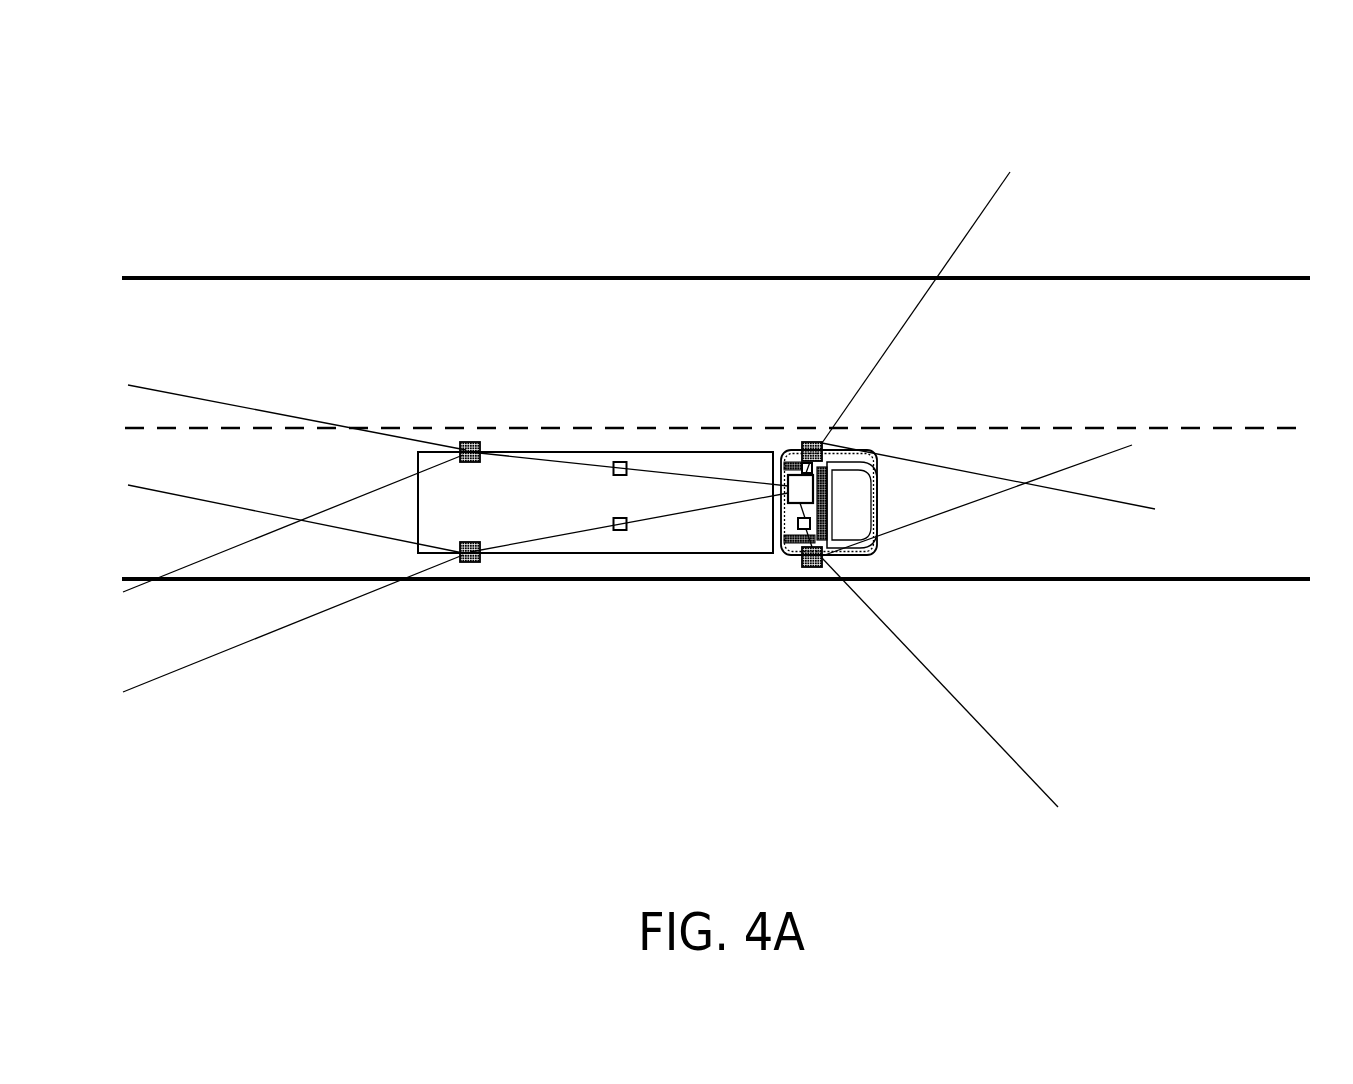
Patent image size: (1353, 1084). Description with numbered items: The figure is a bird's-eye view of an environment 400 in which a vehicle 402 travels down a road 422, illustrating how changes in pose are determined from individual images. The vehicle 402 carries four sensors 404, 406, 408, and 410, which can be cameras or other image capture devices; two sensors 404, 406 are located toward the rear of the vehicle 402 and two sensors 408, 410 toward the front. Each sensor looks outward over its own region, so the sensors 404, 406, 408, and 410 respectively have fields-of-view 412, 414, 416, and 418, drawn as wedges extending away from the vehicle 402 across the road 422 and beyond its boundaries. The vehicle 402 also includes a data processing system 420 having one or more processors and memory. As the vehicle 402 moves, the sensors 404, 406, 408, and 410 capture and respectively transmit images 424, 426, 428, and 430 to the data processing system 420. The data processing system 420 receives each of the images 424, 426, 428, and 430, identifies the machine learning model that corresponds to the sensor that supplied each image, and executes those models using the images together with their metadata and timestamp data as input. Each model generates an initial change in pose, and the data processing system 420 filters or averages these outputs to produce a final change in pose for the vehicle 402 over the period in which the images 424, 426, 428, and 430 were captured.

The environment 400 is at (290, 88).
The vehicle 402 is at (512, 452).
The sensor 404 is at (472, 442).
The sensor 406 is at (473, 562).
The sensor 408 is at (812, 442).
The sensor 410 is at (810, 568).
The field-of-view 412 is at (242, 404).
The field-of-view 414 is at (284, 626).
The field-of-view 416 is at (884, 356).
The field-of-view 418 is at (905, 648).
The data processing system 420 is at (800, 464).
The road 422 is at (170, 277).
The image 424 is at (619, 461).
The image 426 is at (620, 530).
The image 428 is at (876, 471).
The image 430 is at (798, 524).